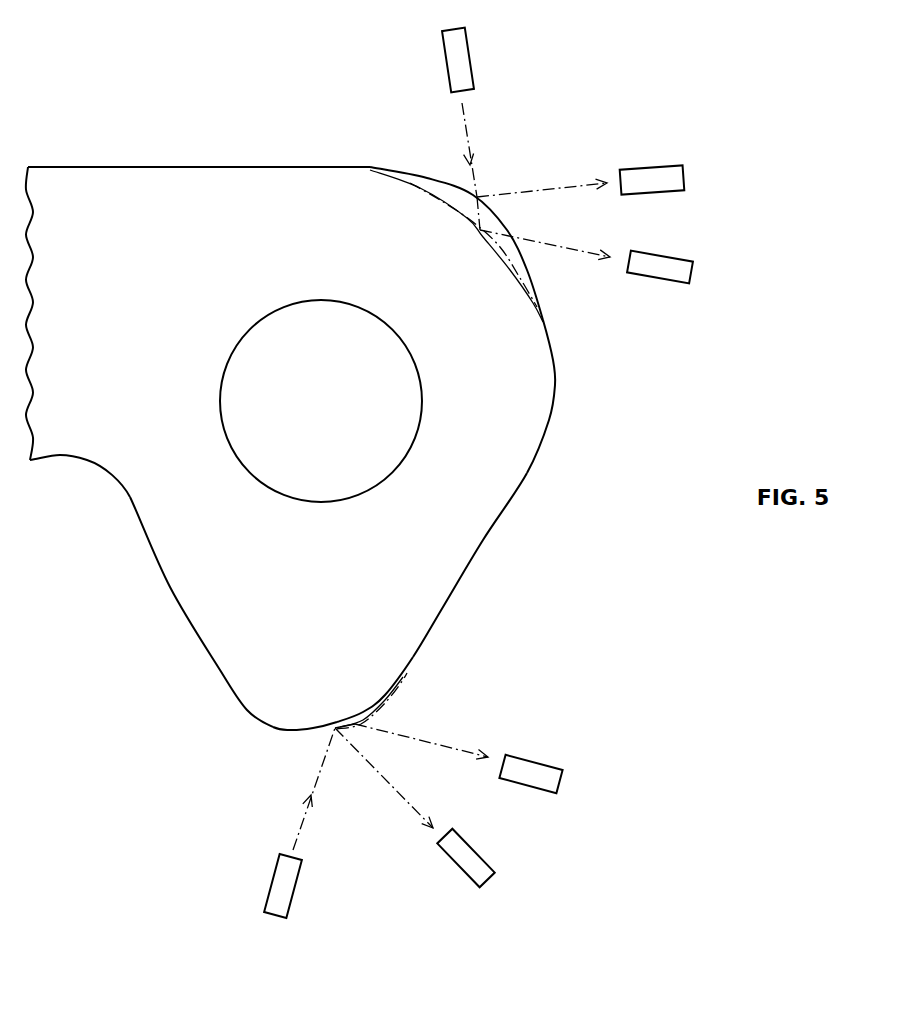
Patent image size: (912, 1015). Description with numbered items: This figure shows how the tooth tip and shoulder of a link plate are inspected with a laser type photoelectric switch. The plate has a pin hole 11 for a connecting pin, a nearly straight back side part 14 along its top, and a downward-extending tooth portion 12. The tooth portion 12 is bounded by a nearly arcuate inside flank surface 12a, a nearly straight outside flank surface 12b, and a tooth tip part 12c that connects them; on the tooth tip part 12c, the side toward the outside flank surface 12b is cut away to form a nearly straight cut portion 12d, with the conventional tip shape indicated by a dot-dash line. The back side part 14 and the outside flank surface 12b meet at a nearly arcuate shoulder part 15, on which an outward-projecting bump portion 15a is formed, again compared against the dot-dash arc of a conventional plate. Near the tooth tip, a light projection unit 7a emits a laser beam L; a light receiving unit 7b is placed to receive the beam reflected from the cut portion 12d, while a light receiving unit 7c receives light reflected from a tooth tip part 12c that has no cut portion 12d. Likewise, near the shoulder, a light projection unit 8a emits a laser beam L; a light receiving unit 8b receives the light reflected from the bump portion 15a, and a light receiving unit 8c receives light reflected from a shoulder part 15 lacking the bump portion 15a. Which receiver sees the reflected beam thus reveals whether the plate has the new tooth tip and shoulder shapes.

The light projection unit 7a is at (278, 890).
The light receiving unit 7b is at (537, 772).
The light receiving unit 7c is at (467, 868).
The light projection unit 8a is at (465, 50).
The light receiving unit 8b is at (653, 173).
The light receiving unit 8c is at (665, 270).
The pin hole 11 is at (247, 330).
The tooth portion 12 is at (310, 453).
The inside flank surface 12a is at (170, 587).
The outside flank surface 12b is at (483, 540).
The tooth tip part 12c is at (278, 728).
The cut portion 12d is at (378, 694).
The back side part 14 is at (130, 166).
The shoulder part 15 is at (437, 197).
The bump portion 15a is at (430, 175).
The laser beam L is at (464, 107).